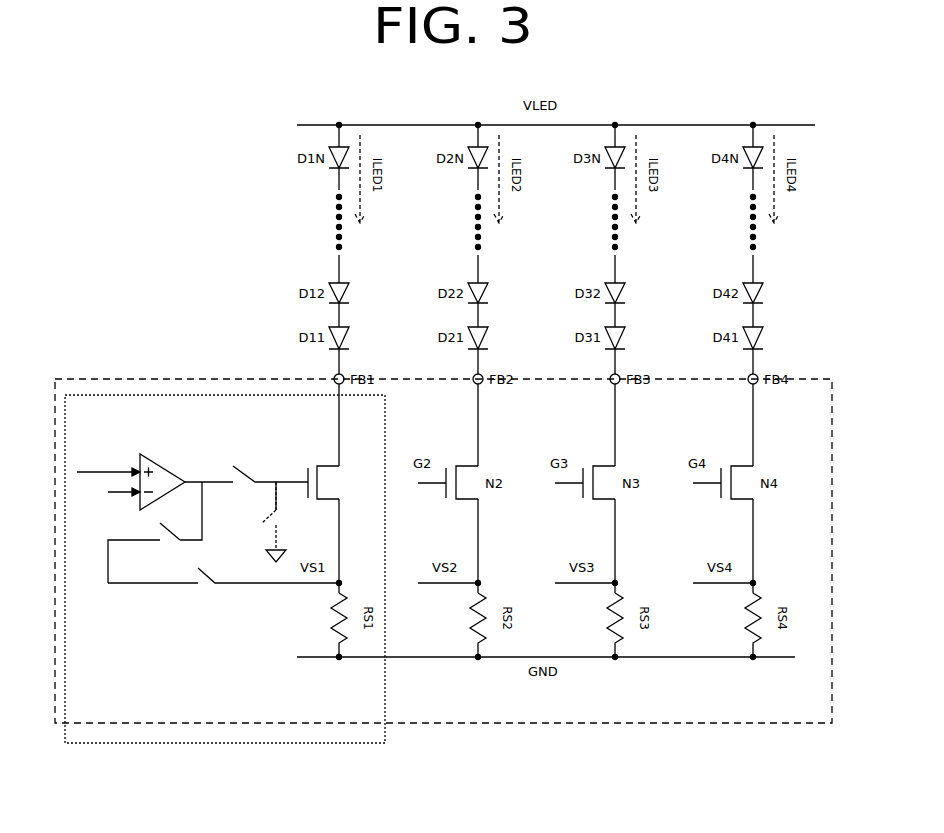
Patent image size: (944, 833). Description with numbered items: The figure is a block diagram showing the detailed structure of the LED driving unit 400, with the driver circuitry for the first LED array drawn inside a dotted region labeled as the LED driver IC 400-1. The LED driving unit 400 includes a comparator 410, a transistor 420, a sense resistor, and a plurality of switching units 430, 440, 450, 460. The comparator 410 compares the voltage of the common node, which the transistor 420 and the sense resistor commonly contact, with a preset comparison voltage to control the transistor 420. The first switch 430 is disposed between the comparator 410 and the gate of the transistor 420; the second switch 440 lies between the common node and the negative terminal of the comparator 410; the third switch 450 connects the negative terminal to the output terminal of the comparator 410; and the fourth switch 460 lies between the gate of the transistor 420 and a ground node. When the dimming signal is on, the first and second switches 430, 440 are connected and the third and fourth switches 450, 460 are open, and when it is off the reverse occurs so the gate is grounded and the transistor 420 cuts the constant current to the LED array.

The LED driving unit 400 is at (834, 378).
The LED driver IC 400-1 is at (365, 748).
The comparator 410 is at (140, 450).
The transistor 420 is at (310, 452).
The first switch 430 is at (226, 455).
The second switch 440 is at (225, 618).
The third switch 450 is at (205, 556).
The fourth switch 460 is at (290, 548).